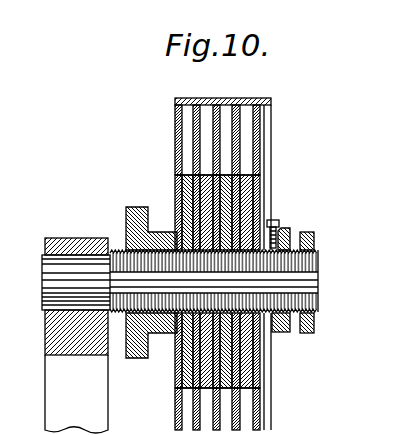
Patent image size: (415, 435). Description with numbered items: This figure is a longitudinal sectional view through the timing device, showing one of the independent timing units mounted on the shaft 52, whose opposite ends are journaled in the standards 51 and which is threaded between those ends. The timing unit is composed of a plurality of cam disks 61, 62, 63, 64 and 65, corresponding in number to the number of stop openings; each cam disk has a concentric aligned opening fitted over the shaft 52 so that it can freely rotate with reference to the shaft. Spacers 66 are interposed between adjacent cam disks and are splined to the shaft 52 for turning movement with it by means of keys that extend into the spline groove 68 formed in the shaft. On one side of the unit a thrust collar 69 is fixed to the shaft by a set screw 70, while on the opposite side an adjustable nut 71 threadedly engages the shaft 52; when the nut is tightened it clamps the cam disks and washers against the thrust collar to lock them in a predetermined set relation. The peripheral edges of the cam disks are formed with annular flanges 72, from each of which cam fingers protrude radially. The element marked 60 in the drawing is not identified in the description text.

The standards 51 is at (57, 390).
The shaft 52 is at (55, 292).
The lower clamping body 60 is at (240, 185).
The cam disk 61 is at (176, 138).
The cam disk 62 is at (176, 118).
The cam disk 63 is at (227, 98).
The cam disk 64 is at (250, 98).
The cam disk 65 is at (268, 124).
The spacers 66 is at (243, 181).
The spline groove 68 is at (118, 287).
The thrust collar 69 is at (281, 232).
The set screw 70 is at (222, 187).
The adjustable nut 71 is at (141, 355).
The annular flanges 72 is at (215, 98).